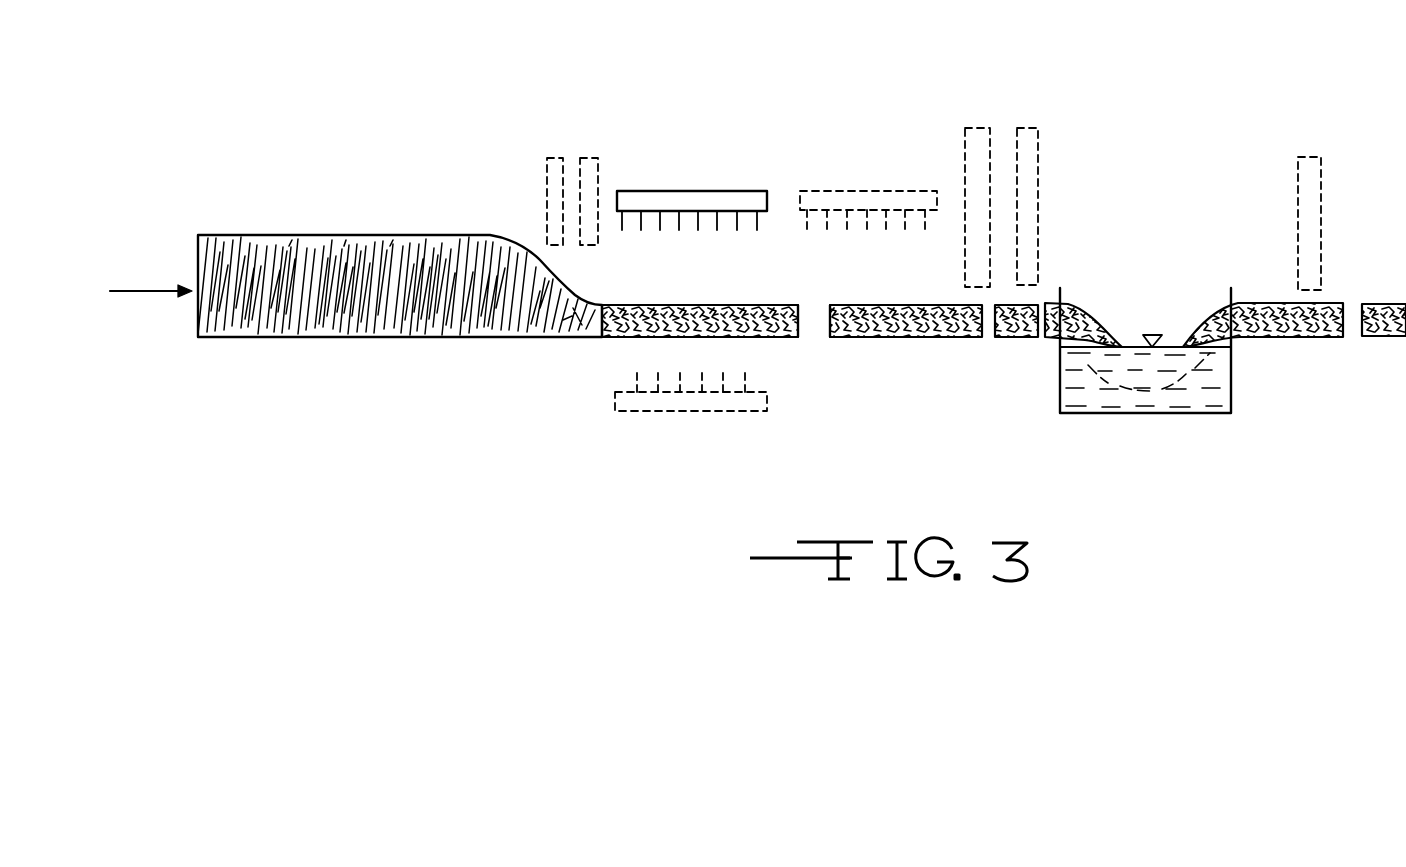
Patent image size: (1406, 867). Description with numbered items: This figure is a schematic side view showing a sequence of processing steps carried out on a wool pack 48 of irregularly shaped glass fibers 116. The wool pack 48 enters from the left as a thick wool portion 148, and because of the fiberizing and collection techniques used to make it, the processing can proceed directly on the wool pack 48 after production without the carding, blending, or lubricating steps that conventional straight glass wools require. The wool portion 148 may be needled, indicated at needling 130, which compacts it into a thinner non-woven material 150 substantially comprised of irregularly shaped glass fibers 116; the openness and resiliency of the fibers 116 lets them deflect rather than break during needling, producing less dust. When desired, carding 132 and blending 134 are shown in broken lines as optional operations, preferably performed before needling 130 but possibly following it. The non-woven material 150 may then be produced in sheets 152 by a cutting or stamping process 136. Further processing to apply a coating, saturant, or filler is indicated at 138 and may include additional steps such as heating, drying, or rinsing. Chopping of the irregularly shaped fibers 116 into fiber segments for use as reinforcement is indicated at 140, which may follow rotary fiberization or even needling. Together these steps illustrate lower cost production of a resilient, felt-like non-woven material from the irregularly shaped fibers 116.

The wool pack 48 is at (252, 312).
The irregularly shaped glass fibers 116 is at (393, 243).
The needling 130 is at (855, 190).
The carding 132 is at (547, 155).
The blending 134 is at (590, 153).
The cutting or stamping process 136 is at (975, 126).
The coating, saturant, or filler application 138 is at (1163, 418).
The chopping 140 is at (1027, 128).
The wool portion 148 is at (548, 340).
The non-woven material 150 is at (865, 339).
The sheets 152 is at (1012, 340).